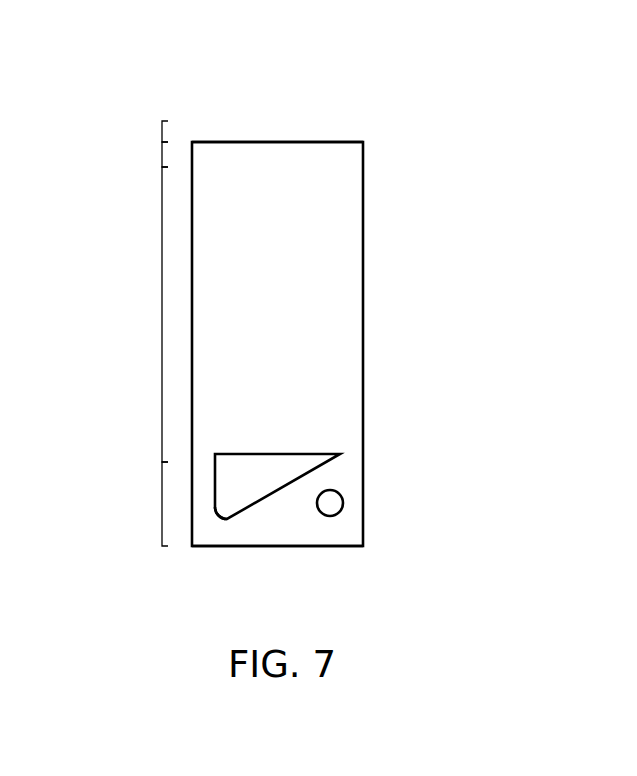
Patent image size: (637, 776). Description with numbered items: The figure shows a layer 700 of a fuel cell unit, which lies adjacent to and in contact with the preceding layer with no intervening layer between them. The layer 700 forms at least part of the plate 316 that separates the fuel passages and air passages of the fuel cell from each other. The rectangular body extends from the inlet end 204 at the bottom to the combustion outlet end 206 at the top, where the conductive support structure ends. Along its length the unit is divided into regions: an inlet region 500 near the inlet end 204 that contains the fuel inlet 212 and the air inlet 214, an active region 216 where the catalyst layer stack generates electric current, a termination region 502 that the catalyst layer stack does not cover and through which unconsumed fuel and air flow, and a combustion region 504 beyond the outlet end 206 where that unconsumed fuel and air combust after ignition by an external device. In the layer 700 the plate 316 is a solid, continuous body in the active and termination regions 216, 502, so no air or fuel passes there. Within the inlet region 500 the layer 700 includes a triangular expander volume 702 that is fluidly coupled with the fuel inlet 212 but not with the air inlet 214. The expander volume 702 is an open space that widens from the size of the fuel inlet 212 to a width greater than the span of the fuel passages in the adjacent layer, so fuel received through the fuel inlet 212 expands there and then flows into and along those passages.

The layer 700 is at (333, 316).
The outlet end 206 is at (279, 142).
The inlet end 204 is at (296, 546).
The plate 316 is at (352, 232).
The expander volume 702 is at (267, 487).
The fuel inlet 212 is at (231, 507).
The air inlet 214 is at (333, 503).
The active region 216 is at (162, 315).
The inlet region 500 is at (162, 507).
The termination region 502 is at (162, 155).
The combustion region 504 is at (162, 131).